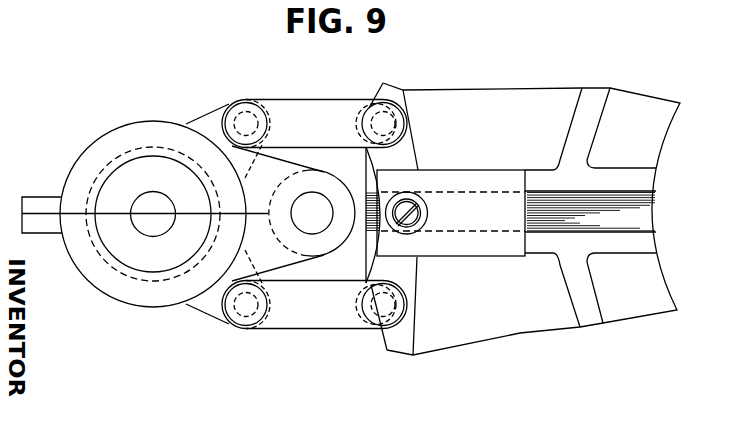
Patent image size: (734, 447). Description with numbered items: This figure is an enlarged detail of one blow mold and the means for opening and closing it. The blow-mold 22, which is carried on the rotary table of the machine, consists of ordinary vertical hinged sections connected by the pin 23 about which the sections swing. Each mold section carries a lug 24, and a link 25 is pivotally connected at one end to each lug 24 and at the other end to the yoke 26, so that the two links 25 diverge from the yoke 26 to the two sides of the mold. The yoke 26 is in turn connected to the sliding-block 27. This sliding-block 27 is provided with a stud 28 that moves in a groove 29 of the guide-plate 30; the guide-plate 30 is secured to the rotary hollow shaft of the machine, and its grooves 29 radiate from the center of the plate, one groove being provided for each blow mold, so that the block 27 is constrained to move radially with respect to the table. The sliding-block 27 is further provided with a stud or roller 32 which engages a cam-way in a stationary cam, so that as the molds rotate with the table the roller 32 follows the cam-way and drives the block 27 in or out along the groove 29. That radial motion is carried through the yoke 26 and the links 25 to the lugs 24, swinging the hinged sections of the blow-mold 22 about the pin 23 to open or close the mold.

The blow-mold 22 is at (145, 214).
The pin 23 is at (306, 214).
The lug 24 is at (207, 120).
The link 25 is at (314, 214).
The yoke 26 is at (409, 153).
The sliding-block 27 is at (451, 213).
The stud 28 is at (474, 192).
The groove 29 is at (617, 210).
The guide-plate 30 is at (648, 138).
The stud or roller 32 is at (415, 229).